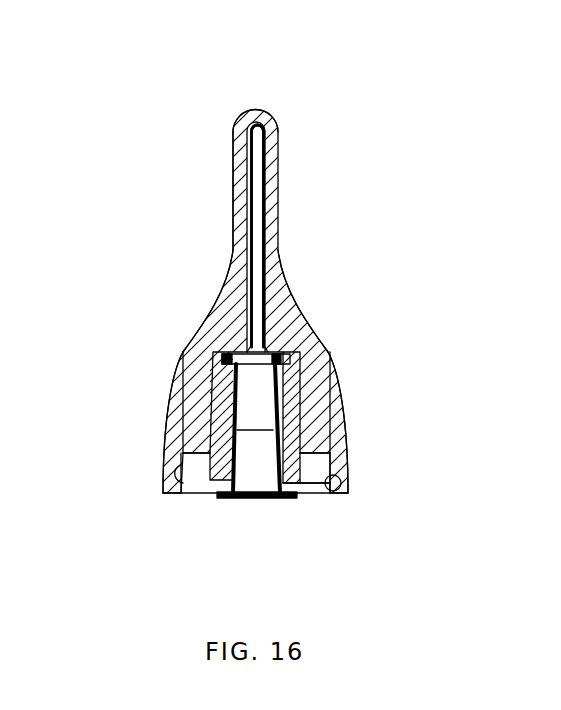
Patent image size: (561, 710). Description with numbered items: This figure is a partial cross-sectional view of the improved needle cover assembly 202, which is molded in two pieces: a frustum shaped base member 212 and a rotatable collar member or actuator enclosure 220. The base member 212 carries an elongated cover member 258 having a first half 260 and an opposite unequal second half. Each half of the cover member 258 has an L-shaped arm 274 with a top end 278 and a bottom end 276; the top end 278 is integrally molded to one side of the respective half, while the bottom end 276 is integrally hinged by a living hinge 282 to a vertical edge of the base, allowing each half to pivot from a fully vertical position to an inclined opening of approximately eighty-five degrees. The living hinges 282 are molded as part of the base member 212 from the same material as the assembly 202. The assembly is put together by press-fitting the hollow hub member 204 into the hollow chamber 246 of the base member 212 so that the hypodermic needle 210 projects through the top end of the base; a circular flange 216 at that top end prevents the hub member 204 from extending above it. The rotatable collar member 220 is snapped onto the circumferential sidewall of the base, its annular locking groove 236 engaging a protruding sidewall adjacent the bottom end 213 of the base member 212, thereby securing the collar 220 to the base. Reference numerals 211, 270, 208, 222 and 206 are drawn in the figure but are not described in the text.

The needle cover assembly 202 is at (357, 60).
The cover member 258 is at (262, 111).
The inner tube 211 is at (268, 130).
The tube tip 270 is at (249, 158).
The hypodermic needle 210 is at (261, 205).
The first half 260 is at (244, 190).
The top end 278 is at (237, 280).
The insert 208 is at (218, 322).
The circular flange 216 is at (306, 328).
The L-shaped arm 274 is at (193, 352).
The frustum shaped base member 212 is at (312, 365).
The rotatable collar member 220 is at (349, 420).
The bottom end 276 is at (194, 423).
The living hinge 282 is at (186, 460).
The lip 222 is at (163, 495).
The annular locking groove 236 is at (200, 487).
The hollow chamber 246 is at (203, 497).
The cup wall 206 is at (242, 484).
The hollow hub member 204 is at (265, 498).
The bottom end 213 is at (315, 483).